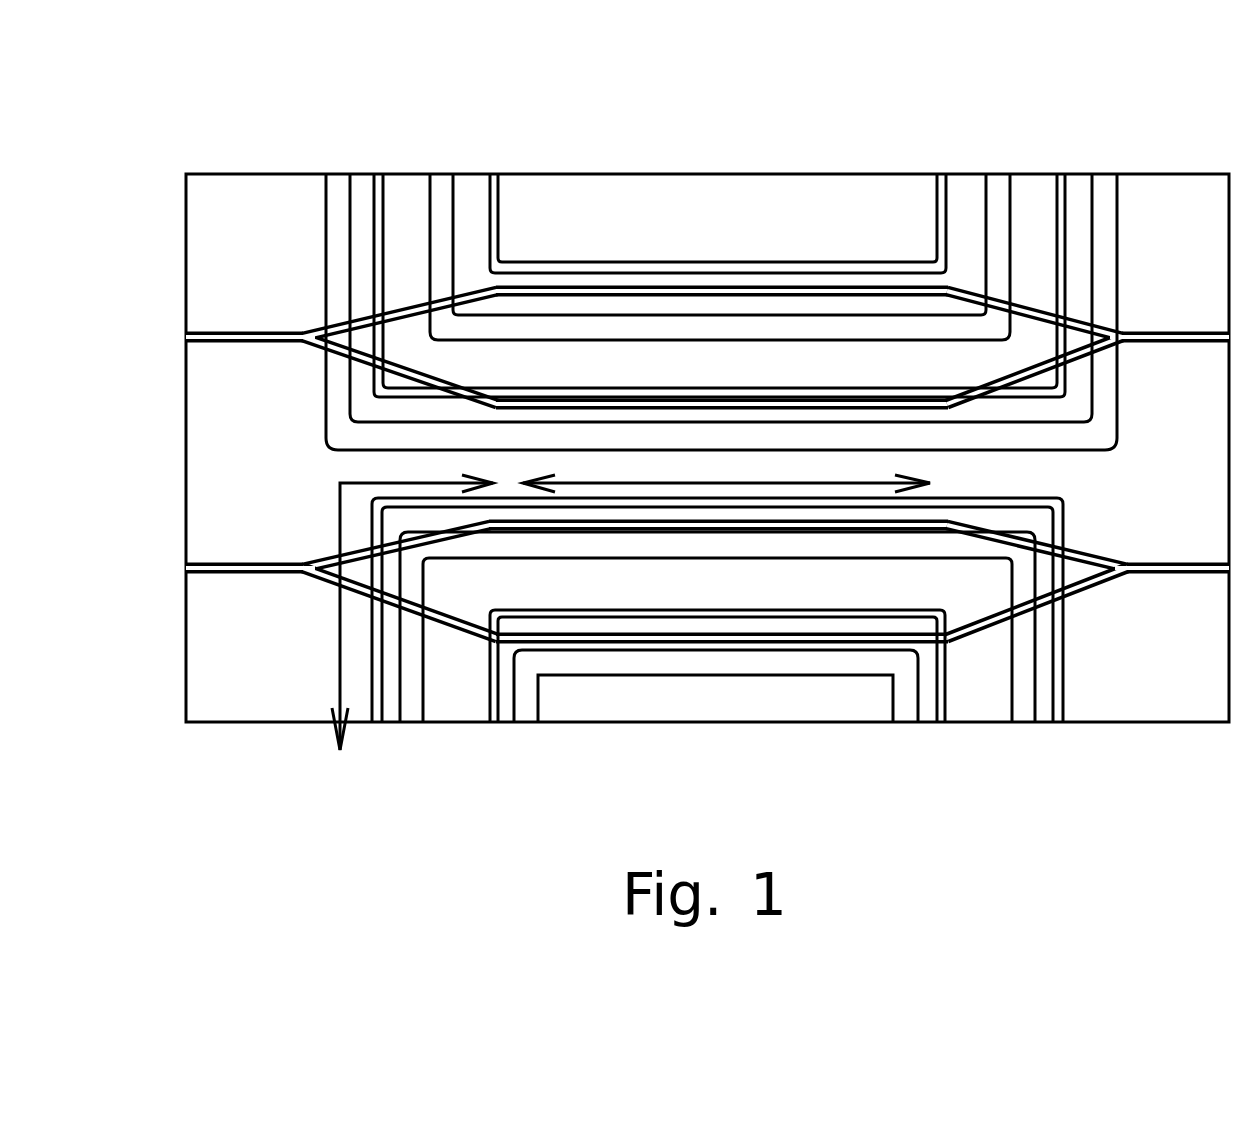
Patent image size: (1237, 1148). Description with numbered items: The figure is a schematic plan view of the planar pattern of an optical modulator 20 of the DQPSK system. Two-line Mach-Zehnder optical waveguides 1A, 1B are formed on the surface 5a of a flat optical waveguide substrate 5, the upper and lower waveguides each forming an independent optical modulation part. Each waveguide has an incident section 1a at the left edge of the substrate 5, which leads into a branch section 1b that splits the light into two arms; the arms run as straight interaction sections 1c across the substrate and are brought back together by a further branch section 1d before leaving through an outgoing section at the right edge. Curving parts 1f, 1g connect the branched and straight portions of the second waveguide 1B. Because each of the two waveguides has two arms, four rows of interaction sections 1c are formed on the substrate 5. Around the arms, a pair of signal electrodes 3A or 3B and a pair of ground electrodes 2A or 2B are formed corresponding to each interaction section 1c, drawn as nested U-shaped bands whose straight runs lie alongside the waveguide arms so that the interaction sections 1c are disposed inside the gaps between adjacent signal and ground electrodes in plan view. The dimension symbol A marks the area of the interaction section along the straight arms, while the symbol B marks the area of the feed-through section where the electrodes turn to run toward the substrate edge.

The optical modulator 20 is at (1178, 173).
The Mach-Zehnder optical waveguide 1A is at (707, 262).
The Mach-Zehnder optical waveguide 1B is at (707, 592).
The incident section 1a is at (248, 350).
The branch section 1b is at (393, 370).
The interaction section 1c is at (768, 400).
The branch section 1d is at (1037, 310).
The curving part 1f is at (487, 645).
The curving part 1g is at (953, 642).
The optical waveguide substrate 5 is at (721, 277).
The surface 5a is at (677, 188).
The ground electrode 2A is at (639, 667).
The ground electrode 2B is at (847, 562).
The signal electrode 3A is at (576, 613).
The signal electrode 3B is at (682, 502).
The area of the interaction section A is at (795, 490).
The area of the feed-through section B is at (338, 617).